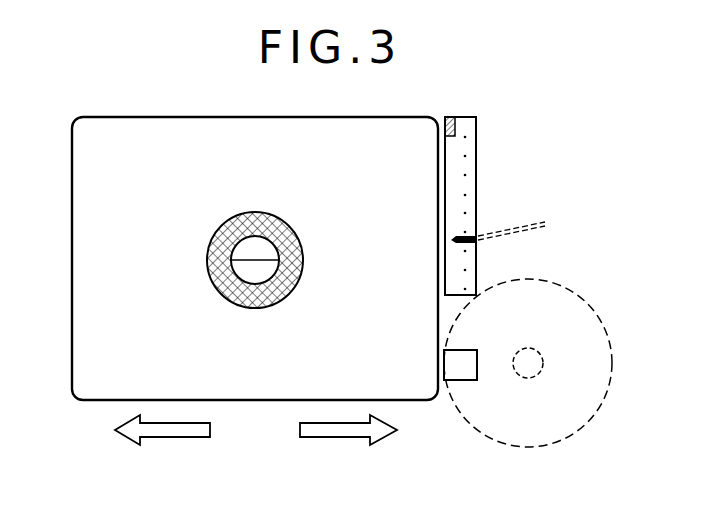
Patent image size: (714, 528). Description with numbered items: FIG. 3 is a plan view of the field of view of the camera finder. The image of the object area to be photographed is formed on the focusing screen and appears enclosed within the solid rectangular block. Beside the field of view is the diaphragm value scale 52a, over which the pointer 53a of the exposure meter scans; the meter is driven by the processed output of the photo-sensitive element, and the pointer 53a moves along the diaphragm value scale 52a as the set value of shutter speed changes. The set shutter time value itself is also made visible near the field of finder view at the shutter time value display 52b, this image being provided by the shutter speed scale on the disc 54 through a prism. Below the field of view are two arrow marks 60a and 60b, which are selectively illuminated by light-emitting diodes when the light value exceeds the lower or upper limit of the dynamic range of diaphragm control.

The diaphragm value scale 52a is at (474, 166).
The pointer 53a is at (470, 236).
The shutter time value display 52b is at (461, 381).
The disc 54 is at (580, 430).
The arrow mark 60a is at (173, 437).
The arrow mark 60b is at (333, 437).